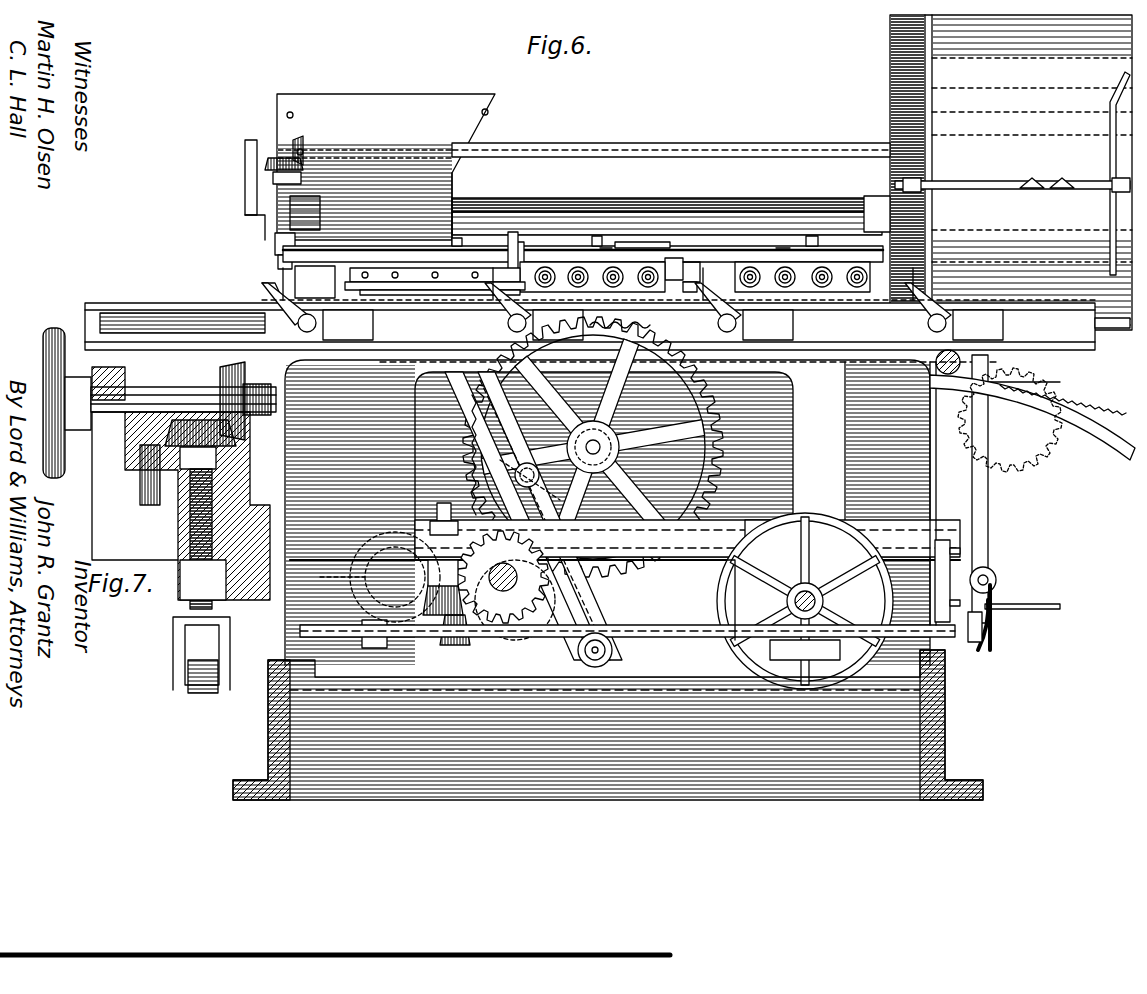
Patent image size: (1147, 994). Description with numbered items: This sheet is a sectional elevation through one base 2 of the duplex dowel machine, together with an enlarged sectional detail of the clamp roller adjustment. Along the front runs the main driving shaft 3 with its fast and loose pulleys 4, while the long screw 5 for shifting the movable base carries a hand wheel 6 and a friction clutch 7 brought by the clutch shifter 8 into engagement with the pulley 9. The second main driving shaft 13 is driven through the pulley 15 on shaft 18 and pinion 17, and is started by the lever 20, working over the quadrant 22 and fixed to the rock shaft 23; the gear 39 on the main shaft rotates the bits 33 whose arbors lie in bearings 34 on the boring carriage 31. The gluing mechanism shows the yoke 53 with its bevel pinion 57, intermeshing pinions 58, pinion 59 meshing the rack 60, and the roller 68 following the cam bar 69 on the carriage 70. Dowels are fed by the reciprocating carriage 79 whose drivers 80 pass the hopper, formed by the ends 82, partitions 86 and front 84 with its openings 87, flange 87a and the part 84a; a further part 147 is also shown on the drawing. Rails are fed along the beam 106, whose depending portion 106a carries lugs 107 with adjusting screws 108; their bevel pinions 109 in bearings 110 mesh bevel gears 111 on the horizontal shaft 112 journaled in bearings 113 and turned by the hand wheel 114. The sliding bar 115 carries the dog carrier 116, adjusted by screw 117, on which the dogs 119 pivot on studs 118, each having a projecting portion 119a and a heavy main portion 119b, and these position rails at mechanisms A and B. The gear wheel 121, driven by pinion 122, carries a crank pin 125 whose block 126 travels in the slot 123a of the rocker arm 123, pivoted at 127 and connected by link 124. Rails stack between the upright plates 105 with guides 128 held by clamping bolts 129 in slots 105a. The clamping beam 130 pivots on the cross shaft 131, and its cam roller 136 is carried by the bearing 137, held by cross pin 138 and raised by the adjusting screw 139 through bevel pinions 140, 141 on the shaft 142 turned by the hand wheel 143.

In FIG. 6, the upright plates 105 is at (890, 40).
In FIG. 6, the guides 128 is at (890, 102).
In FIG. 6, the clamping bolts 129 is at (985, 180).
In FIG. 6, the horizontal slots 105a is at (1036, 178).
In FIG. 6, the beam or frame 130 is at (290, 209).
In FIG. 6, the bevel pinion 141 is at (292, 140).
In FIG. 6, the bevel pinion 140 is at (268, 162).
In FIG. 6, the adjusting screw 139 is at (302, 183).
In FIG. 7, the adjusting screw 139 is at (216, 482).
In FIG. 6, the bearing 137 is at (275, 237).
In FIG. 6, the cam roller 136 is at (278, 258).
In FIG. 6, the hopper front 84 is at (386, 167).
In FIG. 6, the hopper sides or ends 82 is at (455, 180).
In FIG. 6, the shaft or rod 142 is at (645, 139).
In FIG. 7, the shaft or rod 142 is at (183, 399).
In FIG. 6, the cross shaft 131 is at (590, 208).
In FIG. 6, the dowel drivers 80 is at (352, 262).
In FIG. 6, the hopper lip 84a is at (475, 238).
In FIG. 6, the roller 68 is at (520, 262).
In FIG. 6, the bar 69 is at (514, 240).
In FIG. 6, the stop block 147 is at (592, 239).
In FIG. 6, the mechanism B is at (608, 237).
In FIG. 6, the intermeshing pinions 58 is at (642, 238).
In FIG. 6, the U-shaped frame or yoke 53 is at (672, 260).
In FIG. 6, the pinion 59 is at (702, 265).
In FIG. 6, the mechanism A is at (780, 238).
In FIG. 6, the bearings 34 is at (802, 271).
In FIG. 6, the bevel pinion 57 is at (580, 290).
In FIG. 6, the bits 33 is at (820, 280).
In FIG. 6, the carriage 31 is at (701, 285).
In FIG. 6, the vertical partitions 86 is at (405, 268).
In FIG. 6, the reciprocating carriage 79 is at (315, 282).
In FIG. 6, the openings 87 is at (392, 290).
In FIG. 6, the projection or flange 87a is at (450, 294).
In FIG. 6, the plate or beam 106 is at (86, 300).
In FIG. 6, the sliding bar 115 is at (160, 312).
In FIG. 6, the dog carrier 116 is at (262, 318).
In FIG. 6, the carriage 70 is at (606, 304).
In FIG. 6, the studs 118 is at (286, 352).
In FIG. 6, the main portion 119b is at (663, 325).
In FIG. 6, the dogs 119 is at (678, 294).
In FIG. 6, the projecting portion 119a is at (595, 280).
In FIG. 6, the rack 60 is at (620, 320).
In FIG. 6, the adjusting screw 117 is at (1098, 348).
In FIG. 6, the depending portion 106a is at (607, 512).
In FIG. 6, the link 124 is at (410, 366).
In FIG. 6, the gear wheel 121 is at (593, 447).
In FIG. 6, the rocker arm 123 is at (450, 395).
In FIG. 6, the slot 123a is at (465, 440).
In FIG. 6, the crank pin 125 is at (527, 463).
In FIG. 6, the block 126 is at (550, 480).
In FIG. 6, the projections or lugs 107 is at (428, 532).
In FIG. 6, the adjusting screws 108 is at (444, 503).
In FIG. 6, the second main driving shaft 13 is at (503, 577).
In FIG. 6, the pinion 122 is at (516, 600).
In FIG. 6, the bevel pinions 109 is at (428, 600).
In FIG. 6, the bearings 110 is at (425, 575).
In FIG. 6, the bearings 113 is at (362, 632).
In FIG. 6, the bevel gears 111 is at (445, 640).
In FIG. 6, the horizontal shaft 112 is at (910, 608).
In FIG. 6, the pivot 127 is at (615, 650).
In FIG. 6, the pulley 15 is at (350, 535).
In FIG. 6, the shaft 18 is at (380, 575).
In FIG. 6, the pinion 17 is at (320, 574).
In FIG. 6, the bases 2 is at (945, 510).
In FIG. 6, the main driving shaft 3 is at (962, 362).
In FIG. 6, the lever 20 is at (990, 522).
In FIG. 6, the fast and loose pulleys 4 is at (1062, 370).
In FIG. 6, the quadrant 22 is at (1095, 415).
In FIG. 6, the gear 39 is at (1026, 438).
In FIG. 6, the screw 5 is at (860, 575).
In FIG. 6, the hand wheel 6 is at (860, 550).
In FIG. 6, the rock shaft 23 is at (996, 578).
In FIG. 6, the clutch shifter 8 is at (1028, 602).
In FIG. 6, the hand wheel 114 is at (985, 668).
In FIG. 6, the pulley 9 is at (850, 675).
In FIG. 6, the friction clutch 7 is at (815, 680).
In FIG. 7, the hand wheel 143 is at (55, 328).
In FIG. 7, the cross pin 138 is at (222, 605).